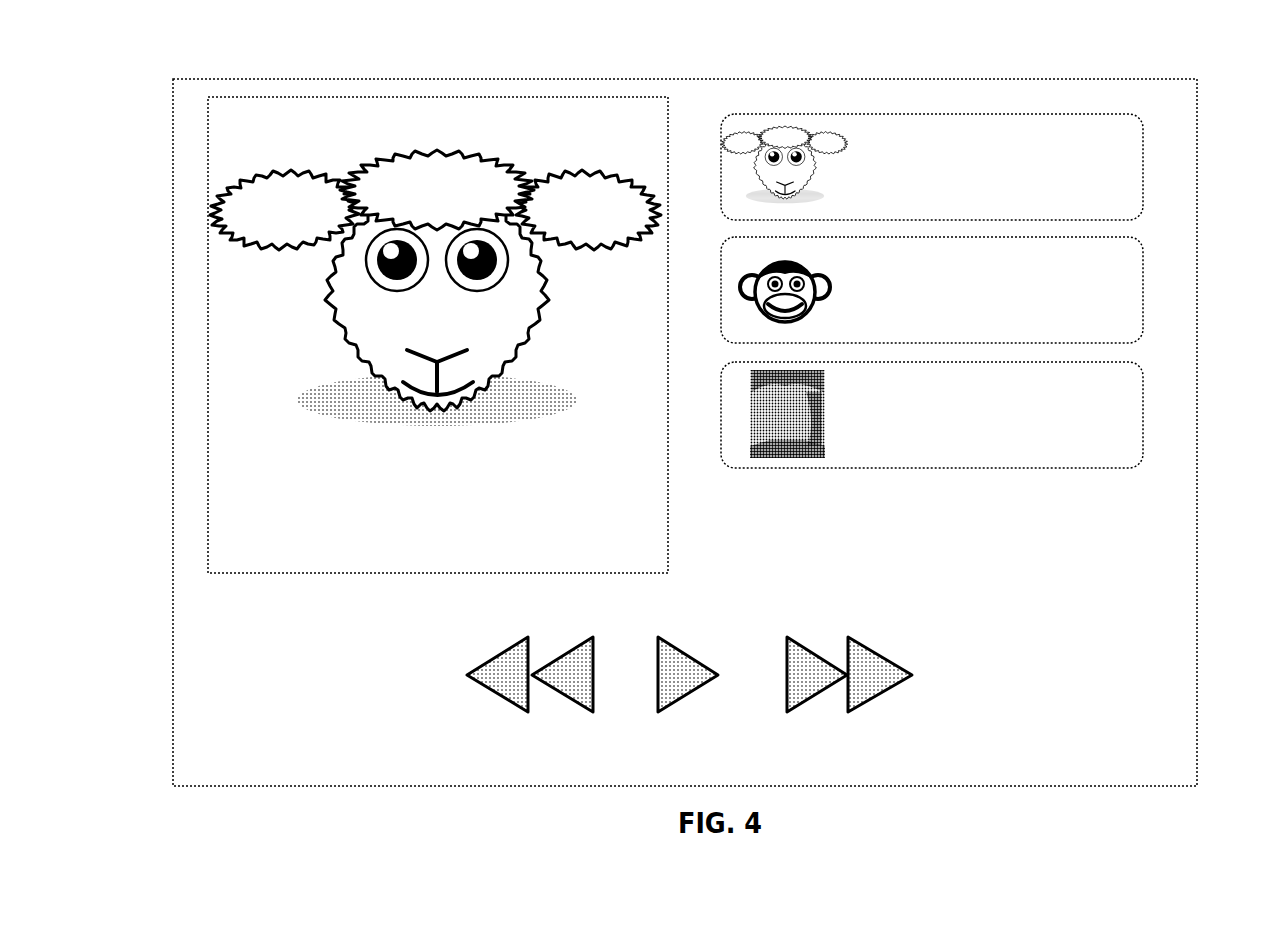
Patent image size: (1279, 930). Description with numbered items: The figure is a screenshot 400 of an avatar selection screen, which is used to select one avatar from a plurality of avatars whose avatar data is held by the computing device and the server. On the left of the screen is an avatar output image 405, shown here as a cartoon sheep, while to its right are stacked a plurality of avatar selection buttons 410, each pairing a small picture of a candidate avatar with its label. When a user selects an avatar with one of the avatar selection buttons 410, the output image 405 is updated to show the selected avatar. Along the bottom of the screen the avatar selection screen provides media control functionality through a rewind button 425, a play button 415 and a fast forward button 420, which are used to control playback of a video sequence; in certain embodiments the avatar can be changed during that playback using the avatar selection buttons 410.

The screenshot 400 is at (262, 77).
The avatar output image 405 is at (495, 95).
The avatar selection buttons 410 is at (1141, 157).
The play button 415 is at (675, 705).
The fast forward button 420 is at (820, 698).
The rewind button 425 is at (508, 702).